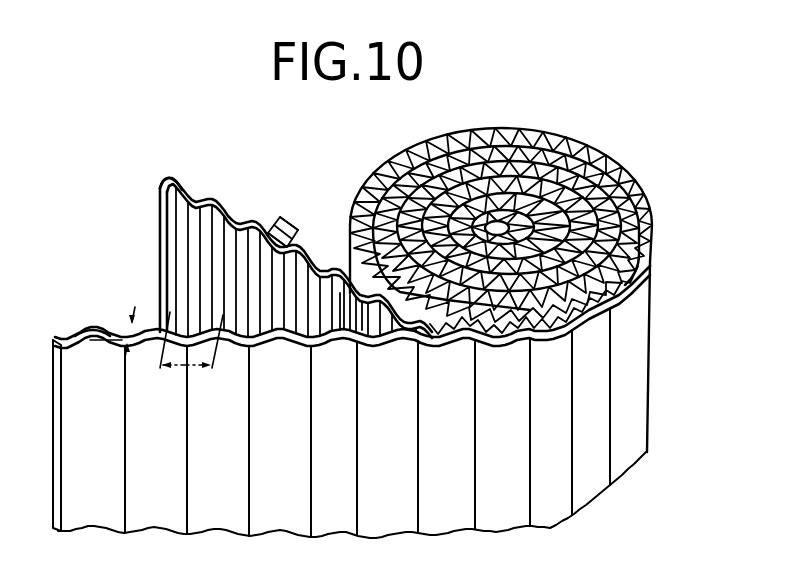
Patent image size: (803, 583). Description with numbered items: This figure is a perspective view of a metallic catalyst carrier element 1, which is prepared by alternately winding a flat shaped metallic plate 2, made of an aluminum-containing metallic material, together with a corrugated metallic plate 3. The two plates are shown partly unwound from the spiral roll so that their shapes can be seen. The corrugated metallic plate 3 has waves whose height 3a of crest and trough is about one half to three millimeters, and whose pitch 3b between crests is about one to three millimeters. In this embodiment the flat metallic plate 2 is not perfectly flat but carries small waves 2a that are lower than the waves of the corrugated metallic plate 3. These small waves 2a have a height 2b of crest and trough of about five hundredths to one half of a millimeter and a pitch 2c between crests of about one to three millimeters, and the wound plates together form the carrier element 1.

The metallic catalyst carrier element 1 is at (627, 165).
The flat shaped metallic plate 2 is at (60, 333).
The small waves 2a is at (91, 330).
The height of crest and trough of small waves 2b is at (122, 343).
The pitch between crests of small waves 2c is at (180, 370).
The corrugated metallic plate 3 is at (241, 215).
The height of crest and trough of corrugated plate waves 3a is at (189, 188).
The pitch between crests of corrugated plate waves 3b is at (292, 225).